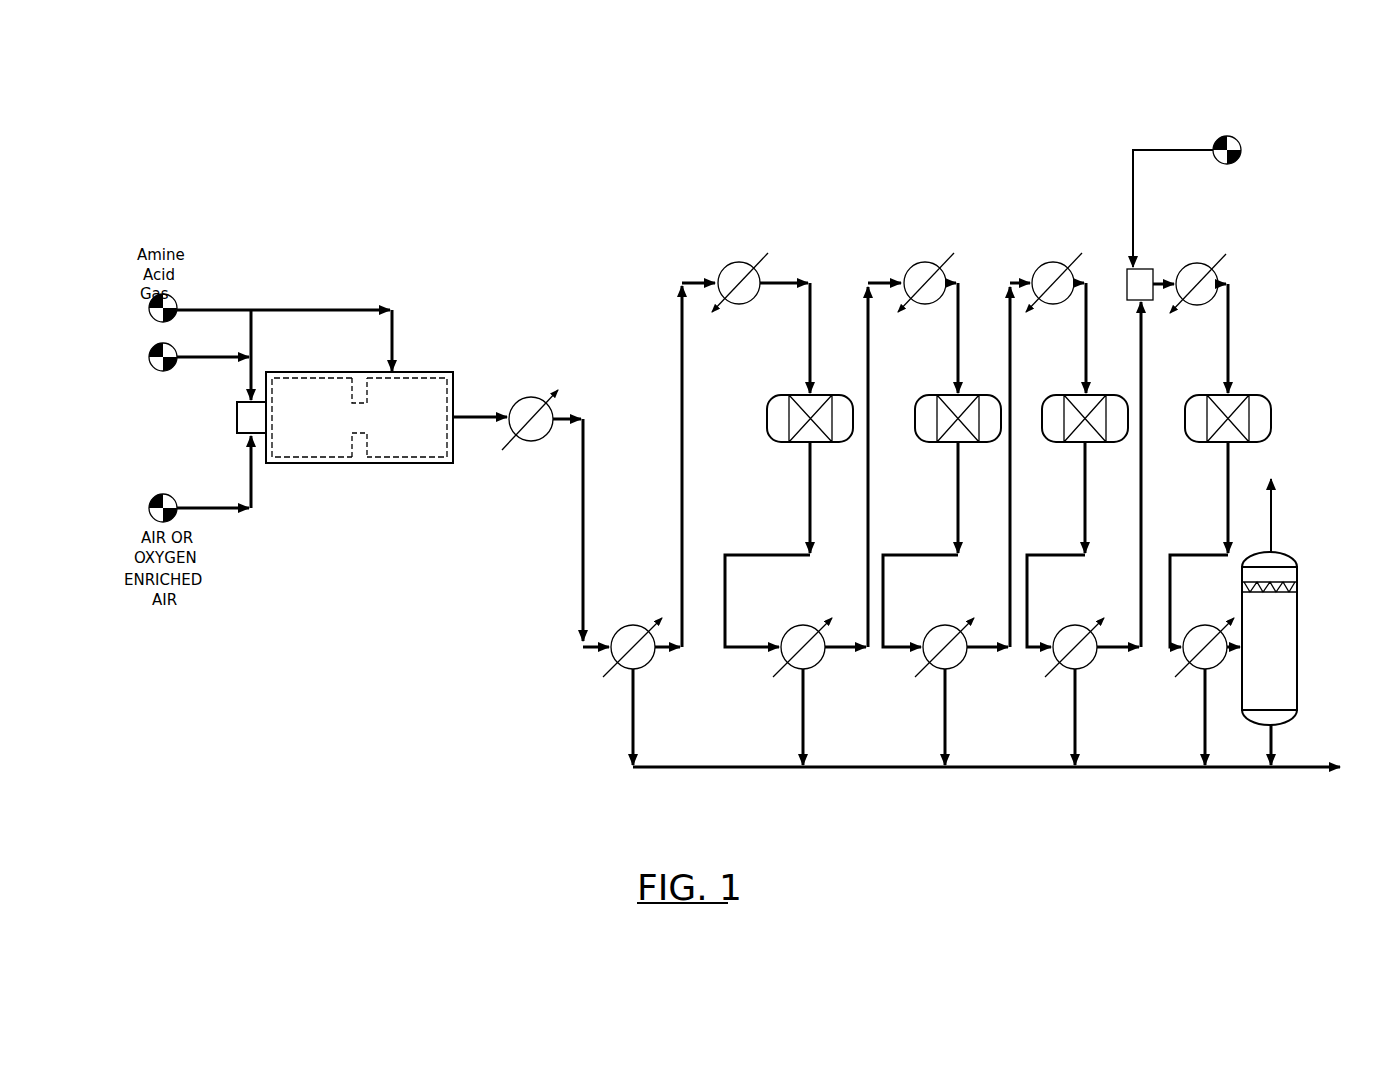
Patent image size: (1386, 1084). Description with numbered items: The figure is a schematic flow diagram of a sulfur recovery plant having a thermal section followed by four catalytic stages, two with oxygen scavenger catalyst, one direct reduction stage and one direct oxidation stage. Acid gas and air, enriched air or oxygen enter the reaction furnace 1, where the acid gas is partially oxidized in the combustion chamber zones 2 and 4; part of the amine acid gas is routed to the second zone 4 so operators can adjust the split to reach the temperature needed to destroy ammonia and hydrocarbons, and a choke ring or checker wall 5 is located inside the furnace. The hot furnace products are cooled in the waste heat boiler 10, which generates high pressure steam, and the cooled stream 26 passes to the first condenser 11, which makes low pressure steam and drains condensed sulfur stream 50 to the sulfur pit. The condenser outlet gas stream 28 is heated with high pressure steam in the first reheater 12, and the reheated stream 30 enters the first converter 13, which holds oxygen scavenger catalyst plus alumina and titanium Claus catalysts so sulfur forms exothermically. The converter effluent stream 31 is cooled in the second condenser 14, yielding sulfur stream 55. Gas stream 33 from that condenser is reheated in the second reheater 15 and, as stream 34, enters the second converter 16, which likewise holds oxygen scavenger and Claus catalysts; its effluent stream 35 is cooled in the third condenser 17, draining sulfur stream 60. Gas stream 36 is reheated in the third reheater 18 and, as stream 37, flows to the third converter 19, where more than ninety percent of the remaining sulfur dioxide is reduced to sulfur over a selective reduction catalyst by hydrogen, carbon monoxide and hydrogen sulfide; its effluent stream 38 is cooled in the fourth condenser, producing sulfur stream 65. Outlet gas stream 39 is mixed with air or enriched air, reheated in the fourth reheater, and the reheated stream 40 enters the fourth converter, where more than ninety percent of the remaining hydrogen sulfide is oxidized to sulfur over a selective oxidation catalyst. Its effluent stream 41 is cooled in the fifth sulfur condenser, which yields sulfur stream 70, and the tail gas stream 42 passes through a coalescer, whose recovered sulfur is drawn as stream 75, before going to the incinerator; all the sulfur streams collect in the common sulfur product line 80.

The reaction furnace 1 is at (233, 399).
The first combustion chamber zone 2 is at (306, 376).
The second combustion chamber zone 4 is at (411, 378).
The choke ring or checker wall 5 is at (350, 429).
The waste heat boiler 10 is at (524, 391).
The No. 1 condenser 11 is at (626, 620).
The No. 1 reheater 12 is at (733, 258).
The No. 1 converter 13 is at (775, 393).
The No. 2 condenser 14 is at (797, 621).
The No. 2 reheater 15 is at (918, 258).
The No. 2 converter 16 is at (922, 386).
The No. 3 condenser 17 is at (937, 621).
The No. 3 reheater 18 is at (1048, 258).
The No. 3 converter 19 is at (1066, 390).
The waste heat boiler outlet stream 26 is at (568, 421).
The No. 1 condenser outlet gas stream 28 is at (682, 381).
The reheated gas stream 30 is at (780, 285).
The No. 1 converter effluent stream 31 is at (755, 554).
The No. 2 condenser gas stream 33 is at (843, 646).
The second reheater outlet line 34 is at (956, 338).
The No. 2 converter effluent stream 35 is at (898, 554).
The No. 3 condenser gas stream 36 is at (985, 646).
The third reheater outlet line 37 is at (1080, 325).
The No. 3 converter effluent stream 38 is at (1028, 634).
The No. 4 condenser gas stream 39 is at (1115, 646).
The reheated process gas stream 40 is at (1222, 334).
The fourth converter effluent stream 41 is at (1185, 554).
The tail gas stream 42 is at (1272, 528).
The sulfur stream 50 is at (635, 703).
The condensed sulfur stream 55 is at (805, 719).
The condensed sulfur stream 60 is at (947, 719).
The condensed sulfur stream 65 is at (1077, 750).
The sulfur outlet from fifth condenser 70 is at (1207, 721).
The sulfur outlet from tail gas column 75 is at (1273, 753).
The sulfur product line 80 is at (1313, 766).